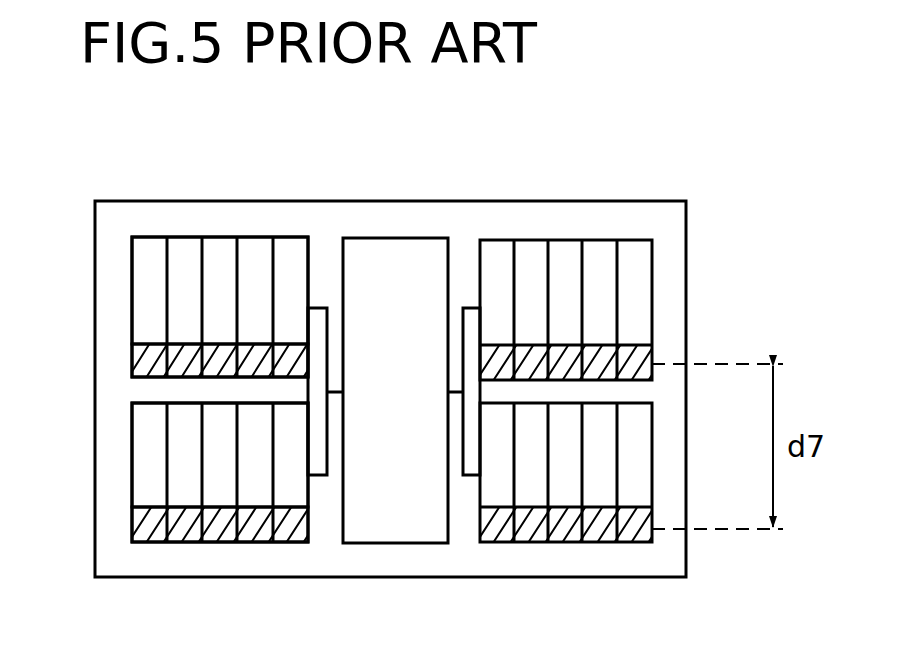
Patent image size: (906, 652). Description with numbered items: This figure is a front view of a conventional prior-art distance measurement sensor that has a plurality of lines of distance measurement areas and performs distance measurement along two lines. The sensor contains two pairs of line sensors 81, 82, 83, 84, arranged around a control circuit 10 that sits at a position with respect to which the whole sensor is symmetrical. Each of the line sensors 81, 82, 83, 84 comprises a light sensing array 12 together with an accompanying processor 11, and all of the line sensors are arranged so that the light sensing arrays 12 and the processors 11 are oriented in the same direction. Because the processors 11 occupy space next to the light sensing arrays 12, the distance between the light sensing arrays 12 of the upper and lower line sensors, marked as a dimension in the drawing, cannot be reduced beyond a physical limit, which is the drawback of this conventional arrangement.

The control circuit 10 is at (405, 543).
The processor 11 is at (132, 290).
The light sensing array 12 is at (132, 360).
The line sensor 81 is at (217, 237).
The line sensor 82 is at (563, 240).
The line sensor 83 is at (223, 542).
The line sensor 84 is at (570, 542).